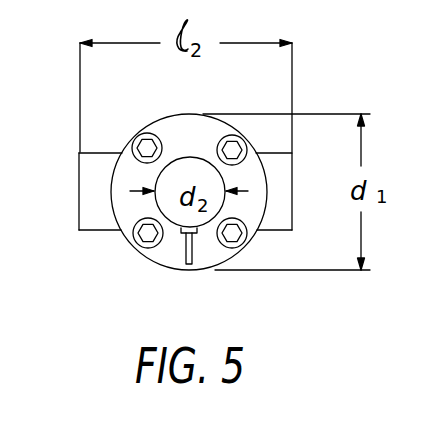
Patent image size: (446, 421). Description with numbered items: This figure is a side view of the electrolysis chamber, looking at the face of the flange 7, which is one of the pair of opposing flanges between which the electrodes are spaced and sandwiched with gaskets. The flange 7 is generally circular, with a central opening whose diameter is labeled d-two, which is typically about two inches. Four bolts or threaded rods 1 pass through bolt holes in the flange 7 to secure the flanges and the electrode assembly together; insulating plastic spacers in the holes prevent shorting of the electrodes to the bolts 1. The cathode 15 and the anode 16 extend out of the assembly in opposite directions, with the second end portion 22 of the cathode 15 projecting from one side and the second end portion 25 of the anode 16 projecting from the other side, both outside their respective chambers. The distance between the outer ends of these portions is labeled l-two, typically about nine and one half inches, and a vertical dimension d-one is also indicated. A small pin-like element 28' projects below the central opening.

The flange 7 is at (203, 116).
The anode 16 is at (92, 176).
The second end portion of cathode 22 is at (92, 231).
The second end portion of anode 25 is at (295, 223).
The cathode 15 is at (277, 231).
The bolts or threaded rods 1 is at (152, 250).
The pin 28' is at (209, 263).